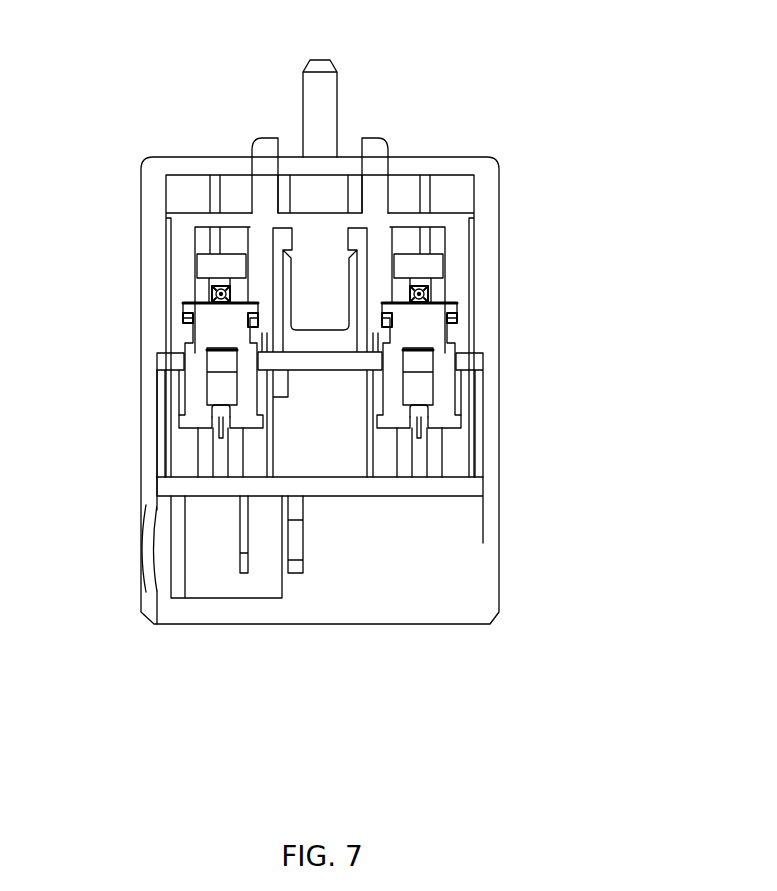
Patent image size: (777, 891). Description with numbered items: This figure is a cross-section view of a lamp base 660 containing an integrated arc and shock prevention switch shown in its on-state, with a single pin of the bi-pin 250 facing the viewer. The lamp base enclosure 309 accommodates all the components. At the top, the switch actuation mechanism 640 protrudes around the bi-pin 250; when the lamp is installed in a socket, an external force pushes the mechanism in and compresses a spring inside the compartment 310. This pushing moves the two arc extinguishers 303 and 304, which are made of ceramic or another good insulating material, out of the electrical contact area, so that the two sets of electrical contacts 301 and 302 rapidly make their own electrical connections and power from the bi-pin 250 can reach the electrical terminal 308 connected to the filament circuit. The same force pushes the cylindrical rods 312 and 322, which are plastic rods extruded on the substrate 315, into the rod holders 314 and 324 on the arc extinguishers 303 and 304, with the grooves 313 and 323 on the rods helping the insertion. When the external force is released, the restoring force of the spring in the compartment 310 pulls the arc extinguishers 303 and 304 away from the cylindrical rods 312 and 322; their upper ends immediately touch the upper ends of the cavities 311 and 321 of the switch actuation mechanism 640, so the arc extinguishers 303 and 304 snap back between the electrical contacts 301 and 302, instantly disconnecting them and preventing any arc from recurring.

The bi-pin 250 is at (307, 65).
The switch actuation mechanism 640 is at (372, 138).
The lamp base 660 is at (440, 148).
The lamp base enclosure 309 is at (487, 247).
The electrical contacts 302 is at (213, 293).
The electrical contacts 301 is at (428, 293).
The cavity 321 is at (193, 315).
The cavity 311 is at (447, 315).
The arc extinguisher 304 is at (207, 322).
The arc extinguisher 303 is at (432, 322).
The rod holder 324 is at (217, 388).
The rod holder 314 is at (422, 388).
The groove 323 is at (218, 427).
The groove 313 is at (422, 430).
The cylindrical rod 322 is at (216, 458).
The cylindrical rod 312 is at (421, 452).
The substrate 315 is at (447, 487).
The electrical terminal 308 is at (235, 548).
The compartment 310 is at (327, 337).